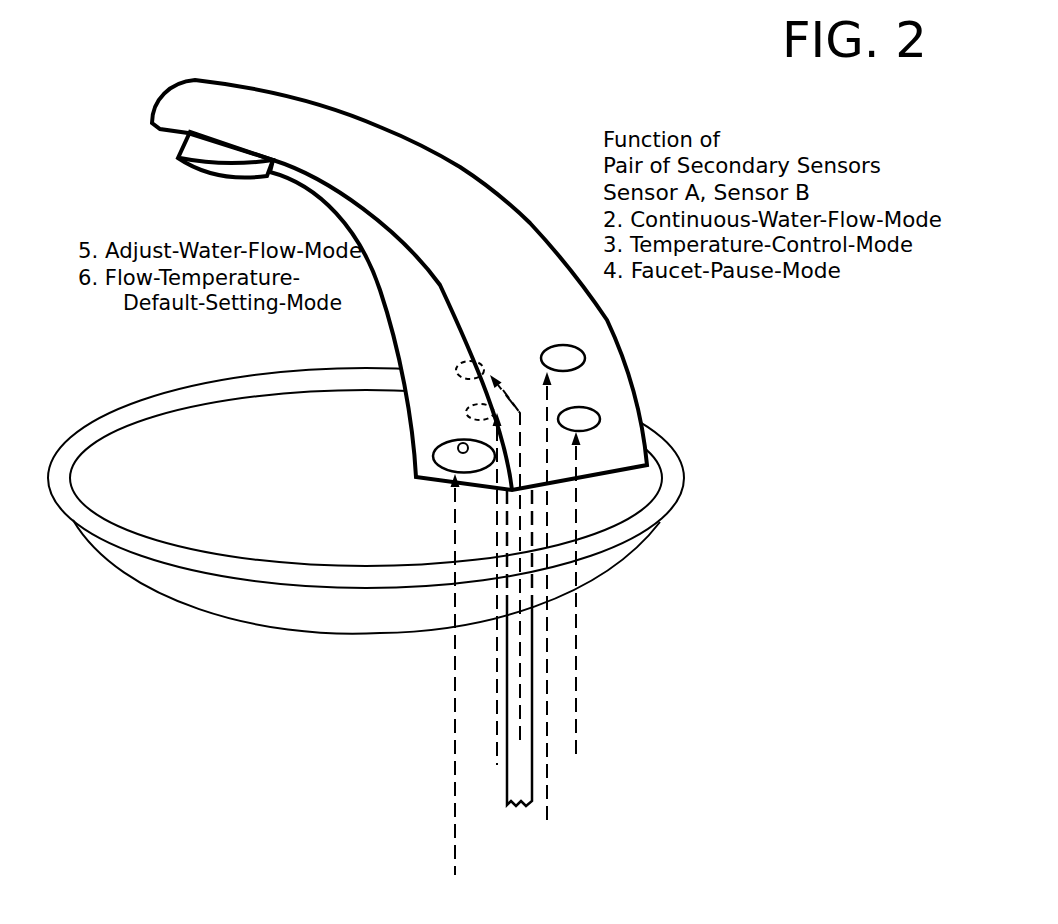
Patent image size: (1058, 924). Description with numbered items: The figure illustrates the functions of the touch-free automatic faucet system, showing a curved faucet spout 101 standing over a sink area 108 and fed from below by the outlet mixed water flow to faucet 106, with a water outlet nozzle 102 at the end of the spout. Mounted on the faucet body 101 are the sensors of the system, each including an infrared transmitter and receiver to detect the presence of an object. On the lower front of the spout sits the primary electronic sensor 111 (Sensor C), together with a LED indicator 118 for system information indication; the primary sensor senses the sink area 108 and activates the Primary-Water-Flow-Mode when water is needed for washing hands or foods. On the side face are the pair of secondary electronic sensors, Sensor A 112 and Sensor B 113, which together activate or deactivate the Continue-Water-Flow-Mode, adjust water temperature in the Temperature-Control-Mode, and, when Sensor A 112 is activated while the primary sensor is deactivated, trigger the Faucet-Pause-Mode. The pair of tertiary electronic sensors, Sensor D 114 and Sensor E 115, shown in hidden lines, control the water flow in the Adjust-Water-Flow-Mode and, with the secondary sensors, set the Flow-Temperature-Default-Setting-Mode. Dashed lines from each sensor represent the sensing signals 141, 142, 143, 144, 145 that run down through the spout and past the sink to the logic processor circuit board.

The faucet spout 101 is at (470, 164).
The water outlet nozzle 102 is at (185, 173).
The outlet mixed water flow to faucet 106 is at (495, 780).
The sink area 108 is at (106, 578).
The primary electronic sensor 111 is at (422, 456).
The secondary electronic sensor A 112 is at (598, 357).
The secondary electronic sensor B 113 is at (618, 412).
The tertiary electronic sensor D 114 is at (435, 355).
The tertiary electronic sensor E 115 is at (445, 395).
The LED indicator 118 is at (445, 436).
The sensing signal 141 is at (445, 742).
The sensing signal 142 is at (560, 640).
The sensing signal 143 is at (590, 672).
The sensing signal 144 is at (512, 648).
The sensing signal 145 is at (488, 692).